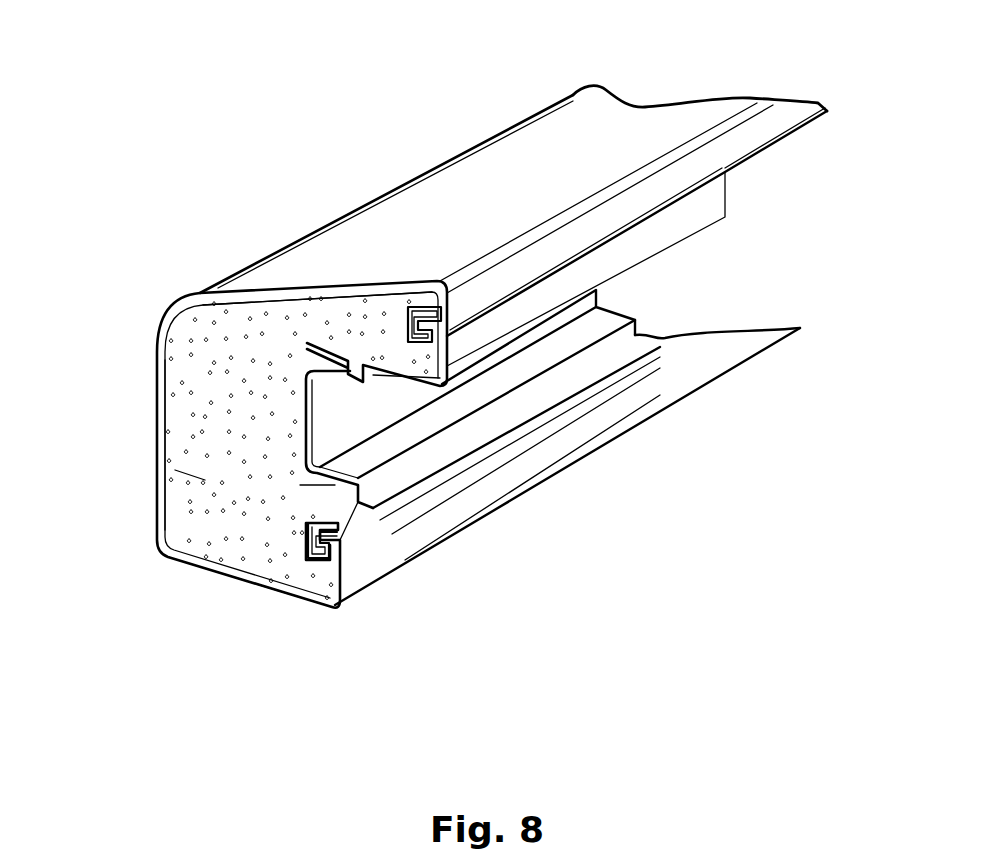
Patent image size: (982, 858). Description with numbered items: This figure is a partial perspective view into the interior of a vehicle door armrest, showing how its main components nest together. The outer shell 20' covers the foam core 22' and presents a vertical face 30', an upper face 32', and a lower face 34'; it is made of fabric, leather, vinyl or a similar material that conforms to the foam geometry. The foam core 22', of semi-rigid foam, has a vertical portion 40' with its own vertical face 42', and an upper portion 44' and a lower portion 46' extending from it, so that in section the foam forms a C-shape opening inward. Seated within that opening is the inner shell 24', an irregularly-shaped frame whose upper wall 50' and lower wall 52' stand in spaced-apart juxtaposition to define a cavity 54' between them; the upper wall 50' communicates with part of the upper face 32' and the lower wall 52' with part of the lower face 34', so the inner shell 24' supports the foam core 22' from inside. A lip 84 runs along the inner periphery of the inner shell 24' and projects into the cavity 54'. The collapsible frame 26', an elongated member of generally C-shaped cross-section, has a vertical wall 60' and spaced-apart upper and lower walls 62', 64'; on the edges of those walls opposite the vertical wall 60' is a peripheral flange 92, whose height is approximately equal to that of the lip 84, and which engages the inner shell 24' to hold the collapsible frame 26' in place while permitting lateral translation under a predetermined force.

The outer shell 20' is at (700, 71).
The foam core 22' is at (240, 444).
The inner shell 24' is at (637, 269).
The collapsible frame 26' is at (275, 575).
The vertical face 30' is at (104, 445).
The upper face 32' is at (513, 211).
The lower face 34' is at (241, 615).
The vertical portion 40' is at (147, 559).
The vertical face 42' is at (107, 445).
The upper portion 44' is at (298, 274).
The lower portion 46' is at (308, 630).
The upper wall 50' is at (329, 265).
The lower wall 52' is at (395, 512).
The cavity 54' is at (336, 434).
The vertical wall 60' is at (560, 431).
The upper wall 62' is at (204, 387).
The lower wall 64' is at (451, 518).
The lip 84 is at (355, 367).
The peripheral flange 92 is at (373, 373).